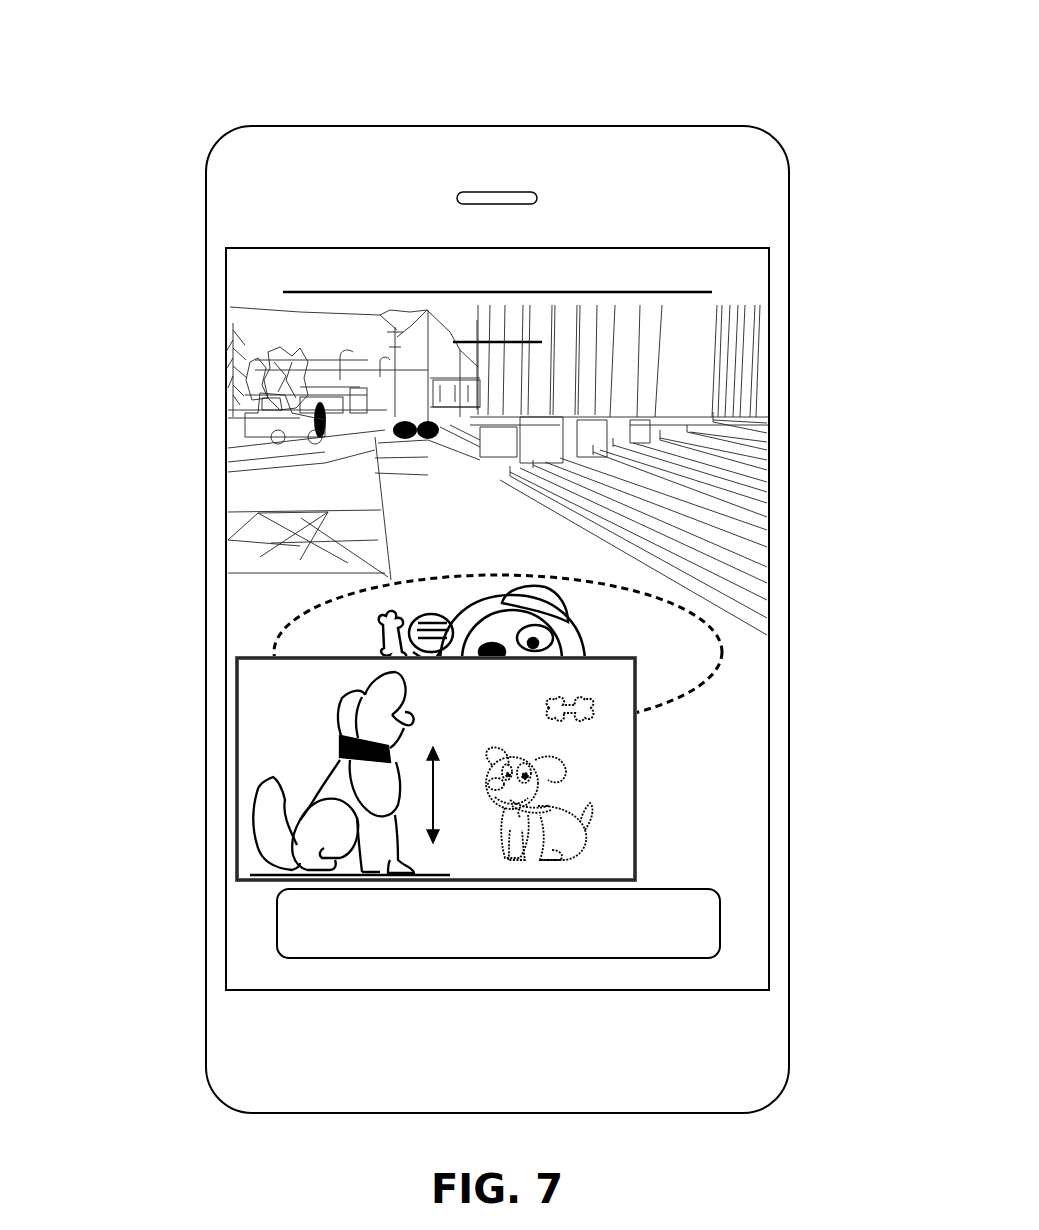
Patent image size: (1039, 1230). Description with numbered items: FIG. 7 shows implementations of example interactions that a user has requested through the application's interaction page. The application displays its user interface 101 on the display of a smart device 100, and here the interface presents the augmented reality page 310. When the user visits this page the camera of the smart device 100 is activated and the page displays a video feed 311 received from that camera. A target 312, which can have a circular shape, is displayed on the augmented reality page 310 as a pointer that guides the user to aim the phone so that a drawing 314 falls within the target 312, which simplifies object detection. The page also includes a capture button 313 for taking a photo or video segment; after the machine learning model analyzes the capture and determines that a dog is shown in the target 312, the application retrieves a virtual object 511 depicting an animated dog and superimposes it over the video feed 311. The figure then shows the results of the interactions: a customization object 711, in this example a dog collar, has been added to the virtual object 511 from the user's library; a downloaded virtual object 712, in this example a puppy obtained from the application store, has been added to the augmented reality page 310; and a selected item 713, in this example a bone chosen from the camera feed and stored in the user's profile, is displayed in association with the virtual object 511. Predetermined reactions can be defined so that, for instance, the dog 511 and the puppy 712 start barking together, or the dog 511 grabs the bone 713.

The smart device 100 is at (732, 180).
The user interface 101 is at (313, 238).
The augmented reality page 310 is at (497, 300).
The video feed 311 is at (733, 340).
The target 312 is at (706, 606).
The capture button 313 is at (740, 926).
The drawing 314 is at (354, 645).
The virtual object 511 is at (298, 703).
The customization object 711 is at (337, 755).
The downloaded virtual object 712 is at (607, 813).
The selected item 713 is at (608, 718).